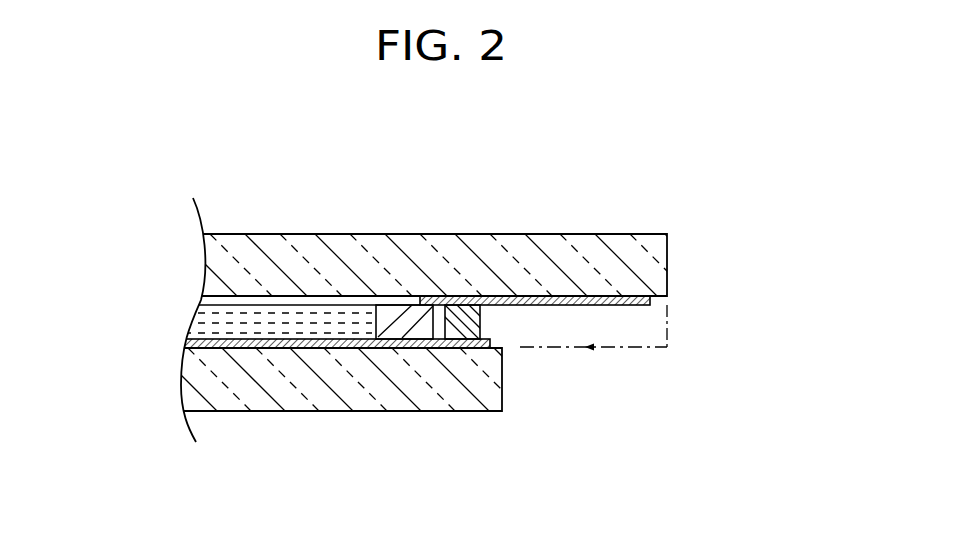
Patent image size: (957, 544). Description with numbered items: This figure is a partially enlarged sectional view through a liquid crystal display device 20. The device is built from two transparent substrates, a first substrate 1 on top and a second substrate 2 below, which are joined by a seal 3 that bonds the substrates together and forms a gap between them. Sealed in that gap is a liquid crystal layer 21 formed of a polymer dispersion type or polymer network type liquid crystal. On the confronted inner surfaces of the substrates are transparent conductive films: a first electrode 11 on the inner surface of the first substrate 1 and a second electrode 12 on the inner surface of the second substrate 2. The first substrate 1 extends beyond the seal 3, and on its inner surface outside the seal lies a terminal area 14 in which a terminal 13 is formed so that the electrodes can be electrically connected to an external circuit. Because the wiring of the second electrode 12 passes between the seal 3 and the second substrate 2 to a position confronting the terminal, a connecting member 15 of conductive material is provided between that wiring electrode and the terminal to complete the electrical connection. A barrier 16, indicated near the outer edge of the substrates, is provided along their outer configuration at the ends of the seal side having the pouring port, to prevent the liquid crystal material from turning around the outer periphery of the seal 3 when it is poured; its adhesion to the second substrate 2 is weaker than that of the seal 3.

The first substrate 1 is at (655, 256).
The second substrate 2 is at (420, 398).
The seal 3 is at (405, 318).
The first electrode 11 is at (314, 301).
The second electrode 12 is at (312, 350).
The terminal 13 is at (569, 298).
The terminal area 14 is at (601, 316).
The connecting member 15 is at (480, 316).
The barrier 16 is at (667, 307).
The liquid crystal display device 20 is at (482, 208).
The liquid crystal layer 21 is at (195, 322).